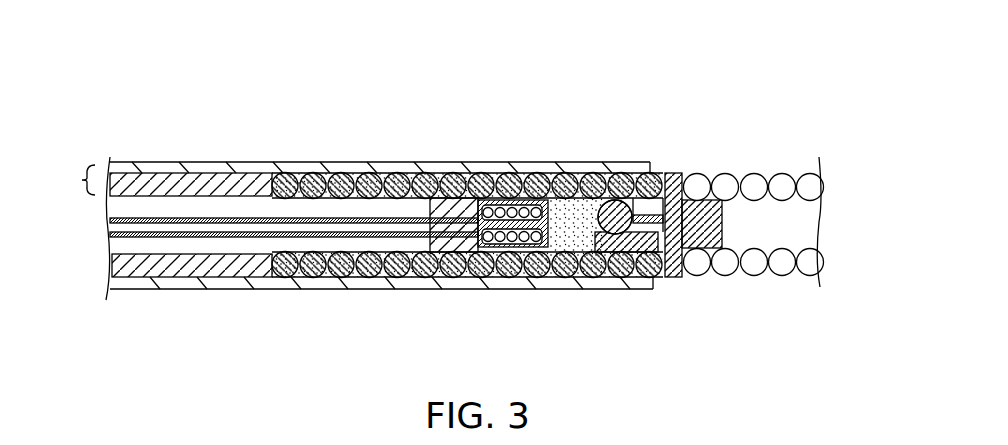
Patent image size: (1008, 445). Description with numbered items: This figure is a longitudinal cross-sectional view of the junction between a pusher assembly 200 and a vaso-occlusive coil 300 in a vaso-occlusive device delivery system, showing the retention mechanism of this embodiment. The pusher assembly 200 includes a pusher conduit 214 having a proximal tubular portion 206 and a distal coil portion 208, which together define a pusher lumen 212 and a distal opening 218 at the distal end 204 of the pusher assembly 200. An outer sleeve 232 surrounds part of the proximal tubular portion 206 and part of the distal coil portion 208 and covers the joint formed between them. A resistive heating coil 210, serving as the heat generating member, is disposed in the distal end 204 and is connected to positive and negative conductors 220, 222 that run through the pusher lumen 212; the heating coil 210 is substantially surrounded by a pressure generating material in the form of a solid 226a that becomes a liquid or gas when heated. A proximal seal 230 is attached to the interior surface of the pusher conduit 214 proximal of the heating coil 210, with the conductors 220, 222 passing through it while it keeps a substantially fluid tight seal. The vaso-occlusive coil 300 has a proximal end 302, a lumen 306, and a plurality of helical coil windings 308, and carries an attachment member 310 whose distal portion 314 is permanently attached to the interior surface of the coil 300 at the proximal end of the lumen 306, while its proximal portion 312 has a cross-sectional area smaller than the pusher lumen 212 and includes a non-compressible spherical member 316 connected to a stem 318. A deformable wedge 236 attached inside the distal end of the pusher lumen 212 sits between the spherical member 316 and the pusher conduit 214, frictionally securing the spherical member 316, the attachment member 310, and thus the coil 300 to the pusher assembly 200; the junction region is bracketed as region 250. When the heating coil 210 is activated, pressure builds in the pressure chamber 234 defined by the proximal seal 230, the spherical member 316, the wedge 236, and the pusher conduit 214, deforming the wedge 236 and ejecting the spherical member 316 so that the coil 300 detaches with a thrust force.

The pusher assembly 200 is at (104, 86).
The distal end 204 is at (400, 126).
The proximal tubular portion 206 is at (131, 170).
The distal coil portion 208 is at (590, 186).
The resistive heating coil 210 is at (488, 208).
The pusher lumen 212 is at (200, 217).
The pusher conduit 214 is at (69, 180).
The distal opening 218 is at (661, 170).
The positive conductor 220 is at (236, 228).
The negative conductor 222 is at (236, 228).
The solid pressure generating material 226a is at (518, 254).
The proximal seal 230 is at (455, 245).
The outer sleeve 232 is at (296, 173).
The pressure chamber 234 is at (575, 240).
The wedge 236 is at (605, 252).
The connection region 250 is at (707, 86).
The vaso-occlusive coil 300 is at (810, 55).
The proximal end 302 is at (786, 127).
The lumen 306 is at (788, 234).
The coil windings 308 is at (810, 262).
The attachment member 310 is at (675, 244).
The proximal portion 312 is at (662, 155).
The distal portion 314 is at (704, 249).
The spherical member 316 is at (598, 216).
The stem 318 is at (640, 252).